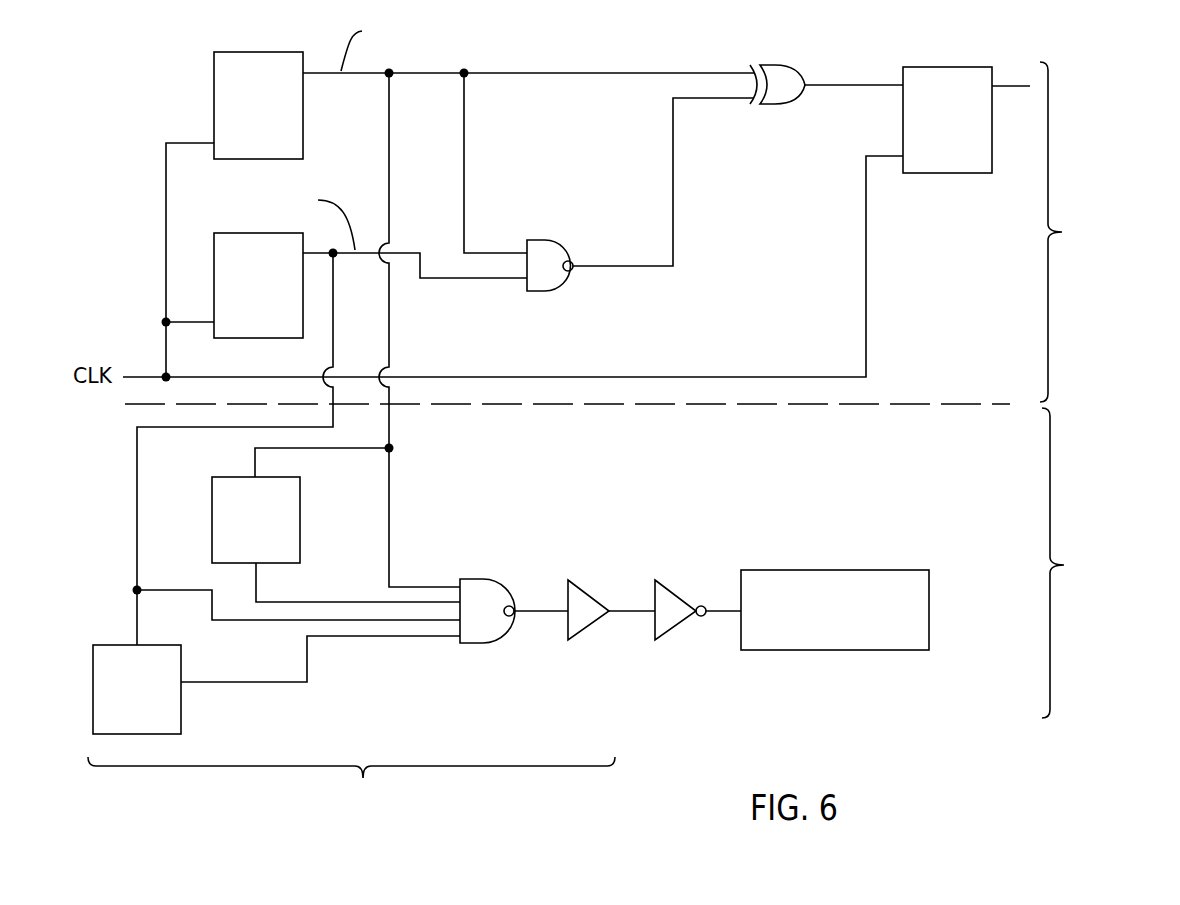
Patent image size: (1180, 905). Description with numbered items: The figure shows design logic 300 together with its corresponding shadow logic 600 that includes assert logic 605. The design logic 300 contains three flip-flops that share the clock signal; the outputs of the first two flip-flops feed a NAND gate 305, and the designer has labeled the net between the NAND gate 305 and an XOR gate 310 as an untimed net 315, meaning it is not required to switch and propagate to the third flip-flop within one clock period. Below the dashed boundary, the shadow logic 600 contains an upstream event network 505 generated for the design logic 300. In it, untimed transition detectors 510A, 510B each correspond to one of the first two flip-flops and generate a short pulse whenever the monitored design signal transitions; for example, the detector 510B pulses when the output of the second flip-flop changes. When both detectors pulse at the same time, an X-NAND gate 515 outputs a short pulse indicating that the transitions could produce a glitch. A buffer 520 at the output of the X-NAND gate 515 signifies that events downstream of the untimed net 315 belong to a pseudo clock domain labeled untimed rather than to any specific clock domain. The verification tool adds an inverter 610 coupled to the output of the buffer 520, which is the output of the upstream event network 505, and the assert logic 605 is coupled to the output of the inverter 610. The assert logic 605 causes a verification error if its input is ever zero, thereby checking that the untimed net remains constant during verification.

The design logic 300 is at (637, 333).
The NAND gate 305 is at (540, 293).
The XOR gate 310 is at (767, 108).
The untimed net 315 is at (673, 170).
The upstream event network 505 is at (351, 628).
The untimed transition detector 510A is at (336, 525).
The untimed transition detector 510B is at (276, 662).
The X-NAND gate 515 is at (472, 578).
The buffer 520 is at (593, 625).
The shadow logic 600 is at (624, 608).
The assert logic 605 is at (818, 635).
The inverter 610 is at (678, 598).